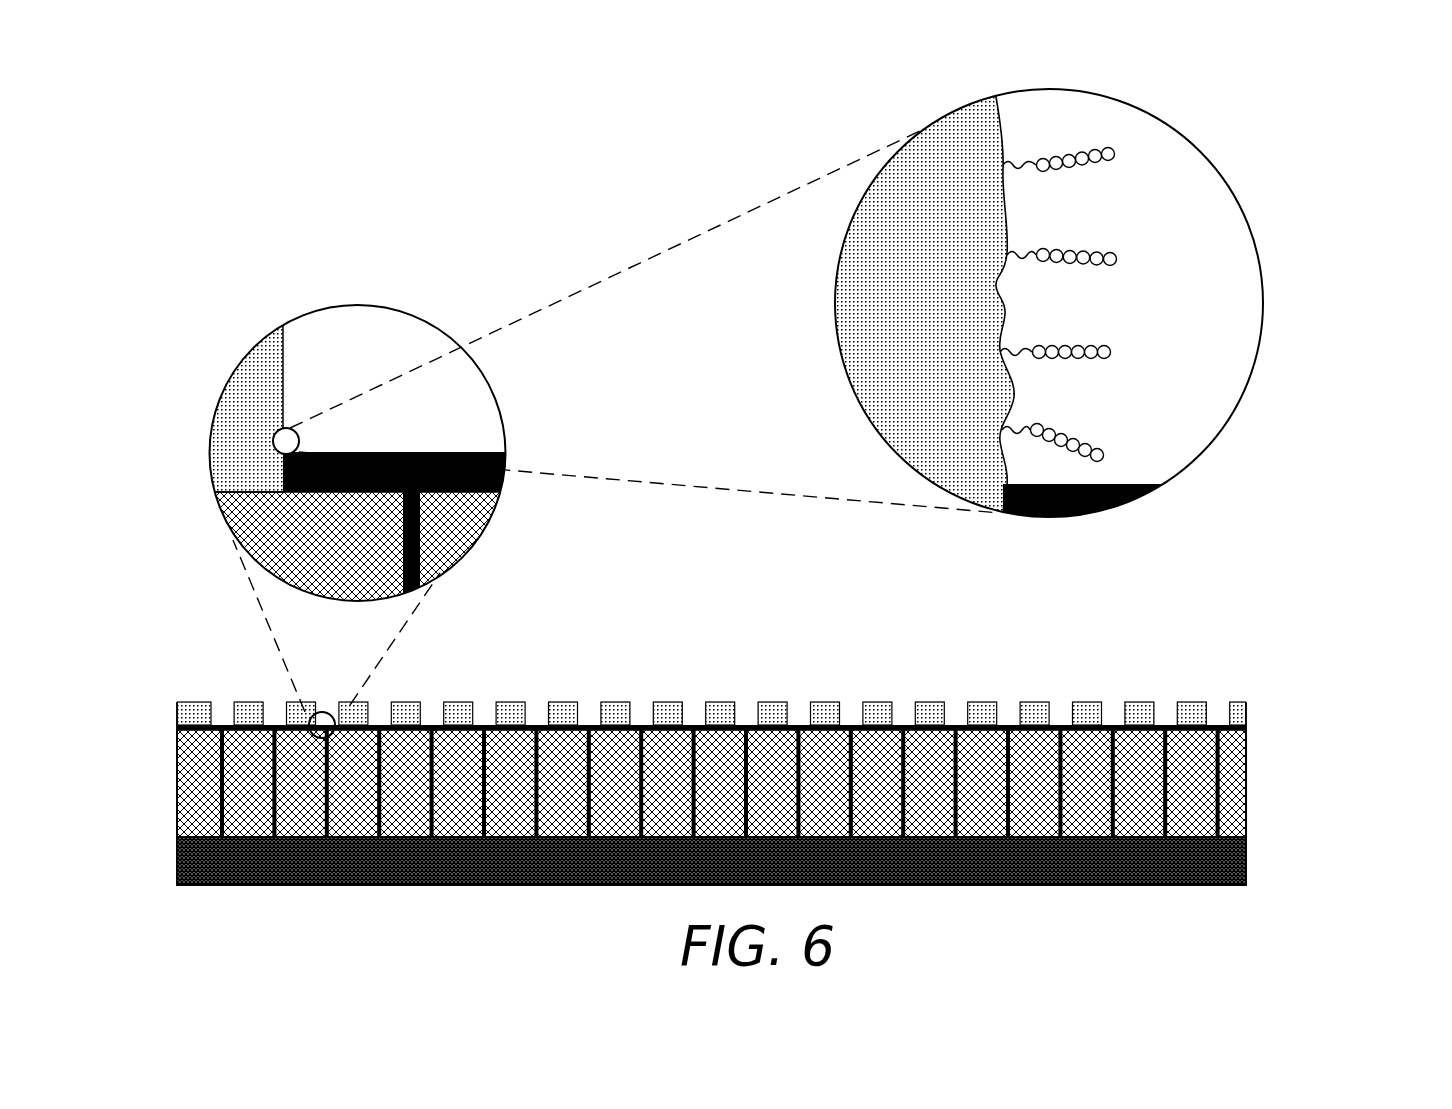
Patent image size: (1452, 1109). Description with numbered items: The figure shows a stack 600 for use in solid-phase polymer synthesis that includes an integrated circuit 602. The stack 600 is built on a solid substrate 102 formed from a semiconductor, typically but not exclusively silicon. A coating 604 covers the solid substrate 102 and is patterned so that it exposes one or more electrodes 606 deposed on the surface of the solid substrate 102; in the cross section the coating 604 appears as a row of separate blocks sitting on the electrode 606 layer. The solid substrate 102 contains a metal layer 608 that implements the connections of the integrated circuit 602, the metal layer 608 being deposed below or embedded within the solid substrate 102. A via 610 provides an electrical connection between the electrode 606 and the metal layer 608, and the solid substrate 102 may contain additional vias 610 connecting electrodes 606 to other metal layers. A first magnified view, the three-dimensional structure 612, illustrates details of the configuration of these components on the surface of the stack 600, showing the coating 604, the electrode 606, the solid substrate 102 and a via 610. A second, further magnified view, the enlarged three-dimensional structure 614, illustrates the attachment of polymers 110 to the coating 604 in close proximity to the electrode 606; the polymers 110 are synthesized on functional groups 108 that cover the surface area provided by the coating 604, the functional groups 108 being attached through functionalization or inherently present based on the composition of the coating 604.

The stack 600 is at (155, 117).
The integrated circuit 602 is at (168, 888).
The coating 604 is at (240, 345).
The electrode 606 is at (442, 445).
The metal layer 608 is at (1140, 512).
The via 610 is at (432, 549).
The three-dimensional structure 612 is at (504, 519).
The enlarged three-dimensional structure 614 is at (1048, 538).
The solid substrate 102 is at (793, 664).
The functional groups 108 is at (1032, 238).
The polymers 110 is at (1133, 337).